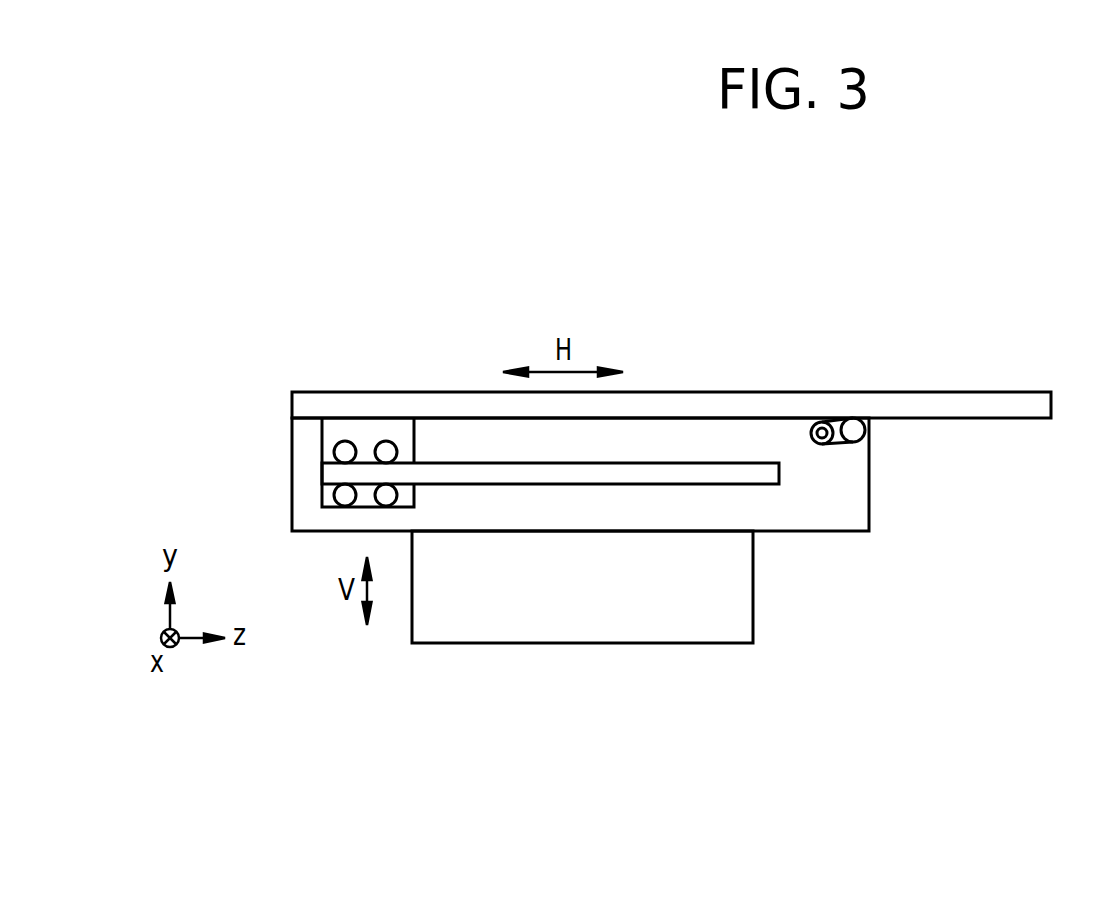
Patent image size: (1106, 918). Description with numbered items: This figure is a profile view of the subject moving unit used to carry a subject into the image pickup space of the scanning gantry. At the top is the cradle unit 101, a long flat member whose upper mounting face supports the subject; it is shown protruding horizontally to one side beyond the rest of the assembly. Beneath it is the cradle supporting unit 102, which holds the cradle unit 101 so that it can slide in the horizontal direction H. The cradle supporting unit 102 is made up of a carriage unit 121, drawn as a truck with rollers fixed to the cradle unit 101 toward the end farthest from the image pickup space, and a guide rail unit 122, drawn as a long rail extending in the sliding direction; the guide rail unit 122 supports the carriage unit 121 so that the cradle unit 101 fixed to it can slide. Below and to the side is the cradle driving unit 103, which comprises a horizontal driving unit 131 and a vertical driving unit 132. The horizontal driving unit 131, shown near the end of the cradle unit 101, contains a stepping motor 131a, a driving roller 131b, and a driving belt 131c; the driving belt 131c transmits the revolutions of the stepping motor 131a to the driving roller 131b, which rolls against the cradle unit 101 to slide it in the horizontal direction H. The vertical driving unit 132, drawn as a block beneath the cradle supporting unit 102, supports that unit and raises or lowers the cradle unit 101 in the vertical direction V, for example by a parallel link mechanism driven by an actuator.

The cradle unit 101 is at (988, 392).
The cradle supporting unit 102 is at (459, 462).
The carriage unit 121 is at (323, 438).
The guide rail unit 122 is at (323, 478).
The cradle driving unit 103 is at (679, 472).
The horizontal driving unit 131 is at (867, 438).
The stepping motor 131a is at (826, 428).
The driving roller 131b is at (862, 424).
The driving belt 131c is at (840, 426).
The vertical driving unit 132 is at (845, 562).